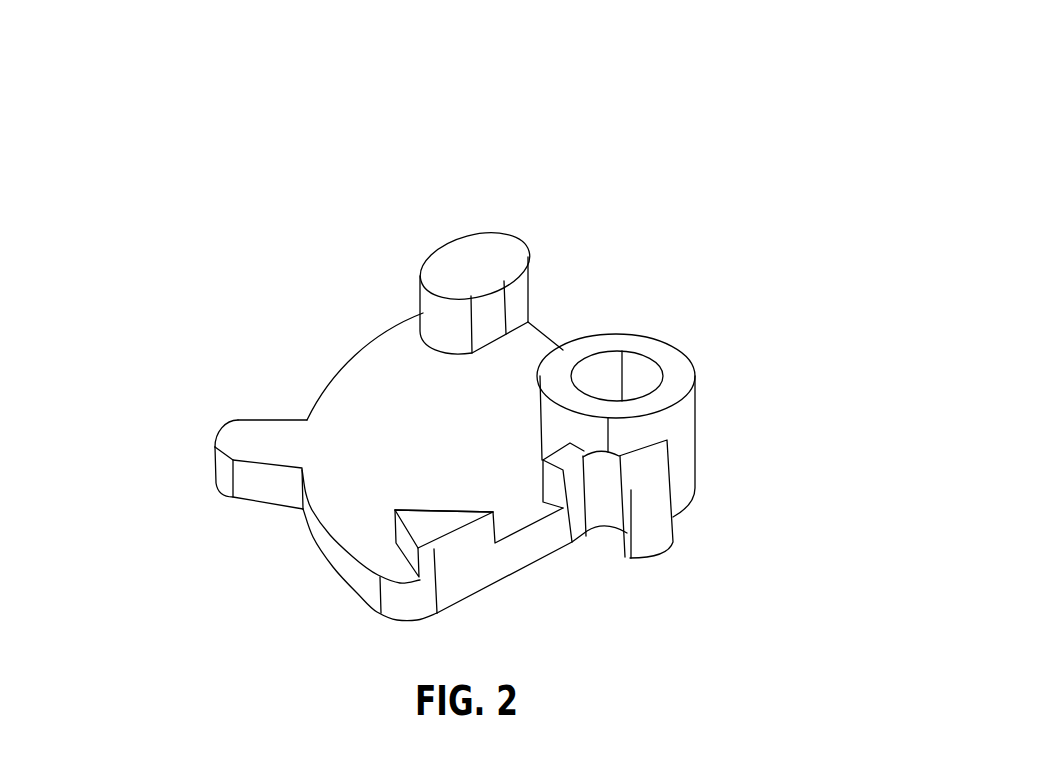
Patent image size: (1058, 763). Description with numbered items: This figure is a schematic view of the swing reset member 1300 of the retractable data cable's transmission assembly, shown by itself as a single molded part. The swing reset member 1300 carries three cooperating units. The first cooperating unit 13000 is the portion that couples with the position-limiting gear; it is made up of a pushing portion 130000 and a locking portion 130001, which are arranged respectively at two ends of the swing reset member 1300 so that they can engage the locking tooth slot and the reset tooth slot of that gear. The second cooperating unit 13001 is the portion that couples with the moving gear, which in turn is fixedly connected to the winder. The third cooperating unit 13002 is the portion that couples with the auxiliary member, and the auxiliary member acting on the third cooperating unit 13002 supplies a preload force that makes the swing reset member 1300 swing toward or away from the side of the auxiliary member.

The swing reset member 1300 is at (468, 63).
The first cooperating unit 13000 is at (782, 117).
The pushing portion 130000 is at (427, 523).
The locking portion 130001 is at (468, 253).
The second cooperating unit 13001 is at (273, 445).
The third cooperating unit 13002 is at (605, 508).